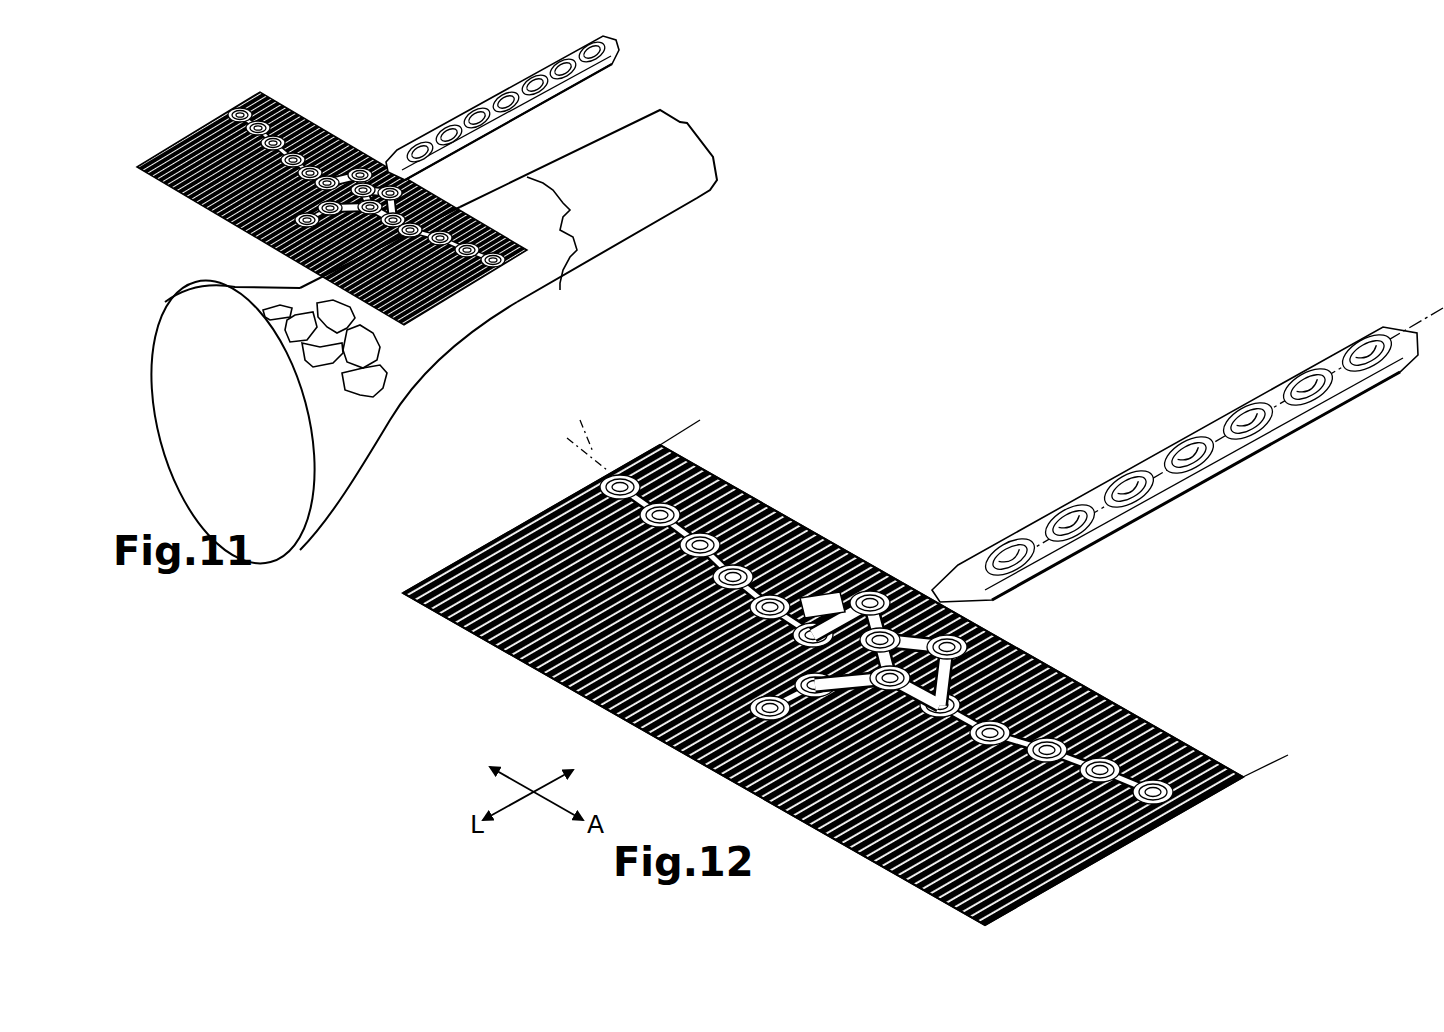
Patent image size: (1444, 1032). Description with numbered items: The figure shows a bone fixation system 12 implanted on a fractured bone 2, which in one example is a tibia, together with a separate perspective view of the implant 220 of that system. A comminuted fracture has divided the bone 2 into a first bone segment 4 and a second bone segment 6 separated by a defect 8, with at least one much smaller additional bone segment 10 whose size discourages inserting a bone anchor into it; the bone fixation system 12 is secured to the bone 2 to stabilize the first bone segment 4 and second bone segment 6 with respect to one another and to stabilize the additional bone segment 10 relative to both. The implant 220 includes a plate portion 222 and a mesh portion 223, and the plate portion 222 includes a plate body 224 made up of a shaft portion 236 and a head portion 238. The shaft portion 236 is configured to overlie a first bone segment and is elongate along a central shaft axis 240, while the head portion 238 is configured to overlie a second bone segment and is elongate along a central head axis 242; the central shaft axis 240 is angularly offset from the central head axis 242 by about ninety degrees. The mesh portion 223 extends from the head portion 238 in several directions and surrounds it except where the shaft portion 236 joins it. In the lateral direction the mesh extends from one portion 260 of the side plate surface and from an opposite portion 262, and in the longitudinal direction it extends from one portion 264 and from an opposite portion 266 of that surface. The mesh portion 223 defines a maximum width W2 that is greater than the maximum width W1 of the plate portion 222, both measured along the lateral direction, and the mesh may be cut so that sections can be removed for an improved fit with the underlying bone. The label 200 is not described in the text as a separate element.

In FIG. 11, the bone 2 is at (598, 232).
In FIG. 11, the first bone segment 4 is at (657, 197).
In FIG. 11, the second bone segment 6 is at (483, 317).
In FIG. 11, the defect 8 is at (560, 290).
In FIG. 11, the additional bone segment 10 is at (380, 383).
In FIG. 11, the bone fixation system 12 is at (510, 83).
In FIG. 12, the bone fixation system 12 is at (1098, 428).
In FIG. 11, the implant 220 is at (548, 67).
In FIG. 12, the bone plate 200 is at (1212, 420).
In FIG. 12, the plate portion 222 is at (1038, 533).
In FIG. 12, the mesh portion 223 is at (753, 490).
In FIG. 12, the plate body 224 is at (1237, 445).
In FIG. 12, the shaft portion 236 is at (1292, 412).
In FIG. 12, the head portion 238 is at (990, 603).
In FIG. 12, the central shaft axis 240 is at (1423, 317).
In FIG. 12, the central head axis 242 is at (578, 432).
In FIG. 12, the one portion of side plate surface 260 is at (810, 836).
In FIG. 12, the another portion of side plate surface 262 is at (573, 700).
In FIG. 12, the one portion of side plate surface 264 is at (1140, 848).
In FIG. 12, the another portion of side plate surface 266 is at (1140, 713).
In FIG. 12, the maximum width of plate portion W1 is at (681, 425).
In FIG. 12, the maximum width of mesh portion W2 is at (510, 527).